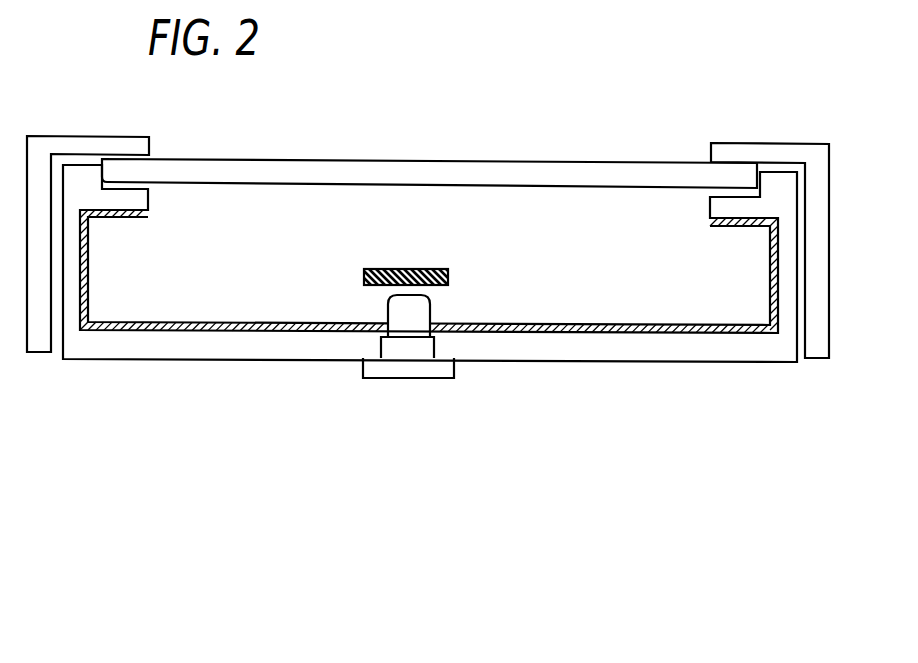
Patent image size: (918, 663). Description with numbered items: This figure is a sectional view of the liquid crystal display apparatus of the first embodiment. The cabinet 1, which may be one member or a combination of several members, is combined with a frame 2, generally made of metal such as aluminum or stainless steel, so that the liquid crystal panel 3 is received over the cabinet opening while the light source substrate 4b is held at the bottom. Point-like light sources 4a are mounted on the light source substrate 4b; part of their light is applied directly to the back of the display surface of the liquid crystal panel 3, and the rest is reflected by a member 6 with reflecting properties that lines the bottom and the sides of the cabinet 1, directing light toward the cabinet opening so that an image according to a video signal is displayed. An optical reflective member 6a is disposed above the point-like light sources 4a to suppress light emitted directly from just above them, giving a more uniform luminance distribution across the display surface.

The cabinet 1 is at (703, 355).
The frame 2 is at (783, 147).
The liquid crystal panel 3 is at (613, 168).
The point-like light sources 4a is at (410, 308).
The light source substrate 4b is at (382, 373).
The member which has reflecting properties 6 is at (552, 323).
The optical reflective member 6a is at (367, 282).